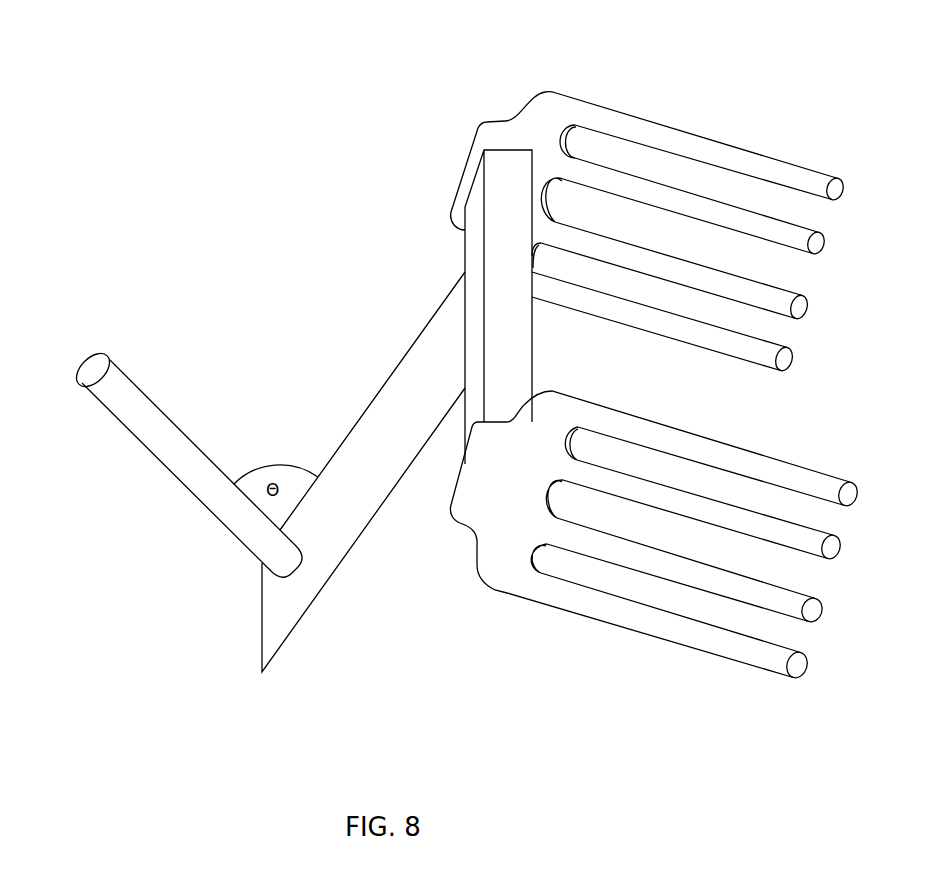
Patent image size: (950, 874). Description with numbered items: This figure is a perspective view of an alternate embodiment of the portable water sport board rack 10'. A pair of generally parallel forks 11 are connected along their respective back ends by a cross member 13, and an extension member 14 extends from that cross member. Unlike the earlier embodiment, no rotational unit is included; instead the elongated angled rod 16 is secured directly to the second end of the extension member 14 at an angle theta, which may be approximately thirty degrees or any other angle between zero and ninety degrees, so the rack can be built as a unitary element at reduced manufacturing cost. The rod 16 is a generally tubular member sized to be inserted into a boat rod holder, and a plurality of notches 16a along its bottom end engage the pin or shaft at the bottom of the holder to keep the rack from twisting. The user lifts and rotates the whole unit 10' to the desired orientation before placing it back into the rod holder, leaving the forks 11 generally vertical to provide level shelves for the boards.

The rack 10' is at (114, 48).
The forks 11 is at (550, 118).
The cross member 13 is at (512, 271).
The extension member 14 is at (380, 459).
The angled rod 16 is at (160, 443).
The notches 16a is at (102, 380).